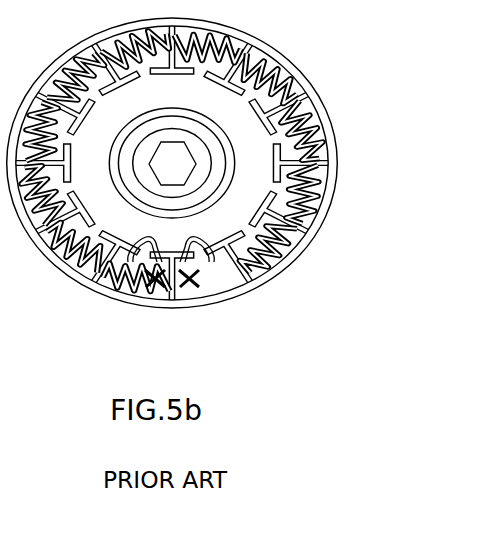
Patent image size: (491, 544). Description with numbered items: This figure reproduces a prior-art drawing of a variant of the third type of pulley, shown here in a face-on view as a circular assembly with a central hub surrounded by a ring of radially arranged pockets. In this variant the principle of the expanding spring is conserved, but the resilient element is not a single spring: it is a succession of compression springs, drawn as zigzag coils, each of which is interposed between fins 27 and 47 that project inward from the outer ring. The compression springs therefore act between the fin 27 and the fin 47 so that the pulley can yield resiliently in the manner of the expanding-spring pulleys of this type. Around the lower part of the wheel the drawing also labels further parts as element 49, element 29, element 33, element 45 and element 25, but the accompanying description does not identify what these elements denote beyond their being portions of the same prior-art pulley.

The outer housing ring 49 is at (90, 287).
The stator ring 29 is at (250, 288).
The fin 27 is at (178, 288).
The spring 33 is at (118, 287).
The fin 47 is at (140, 296).
The left pawl 45 is at (103, 288).
The right pawl 25 is at (227, 288).